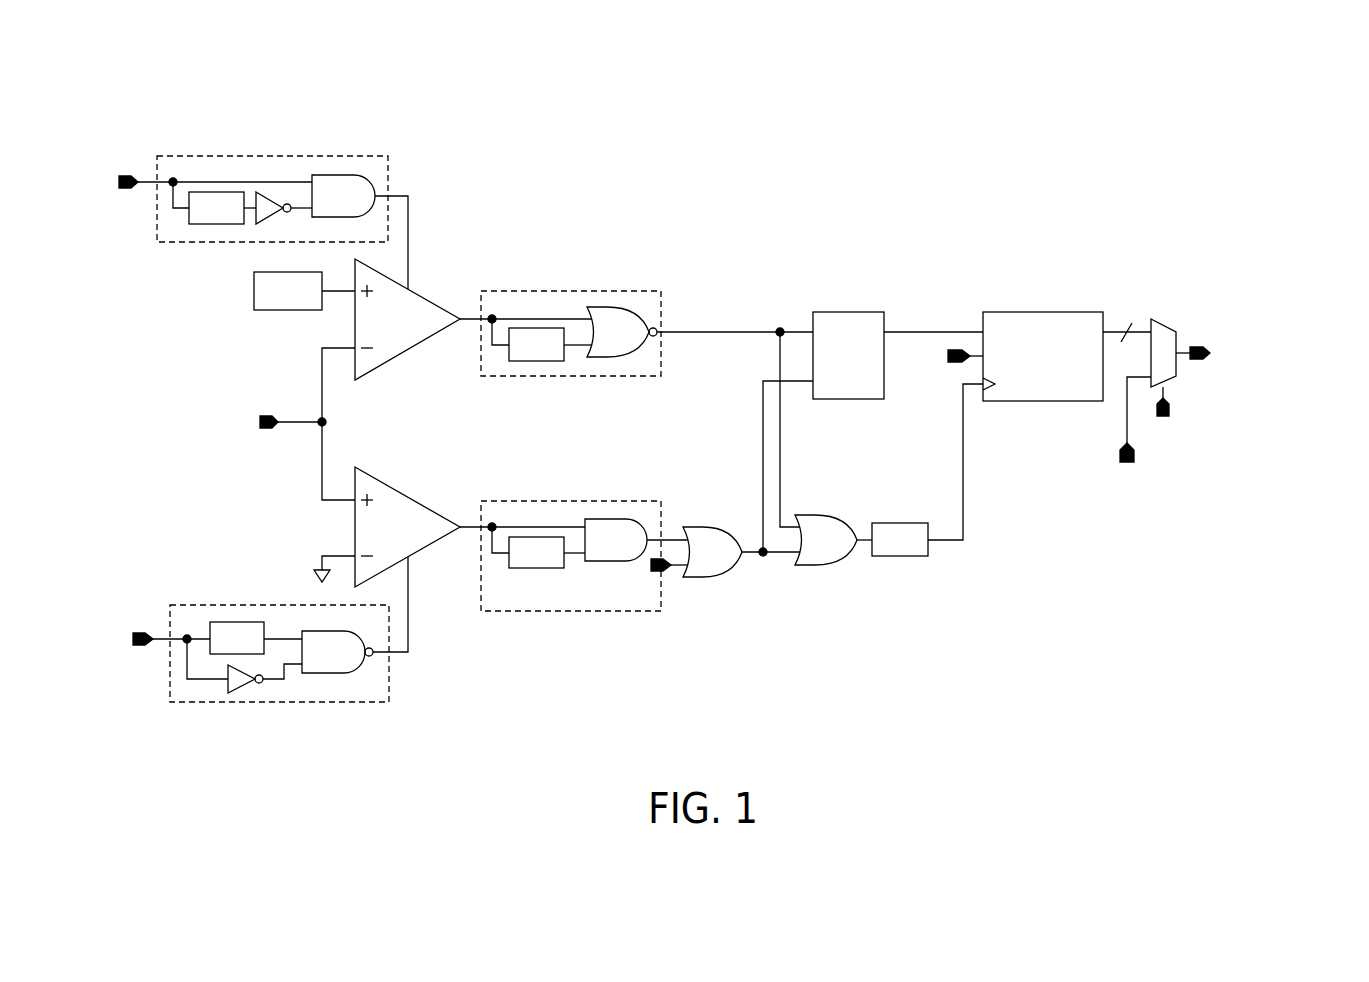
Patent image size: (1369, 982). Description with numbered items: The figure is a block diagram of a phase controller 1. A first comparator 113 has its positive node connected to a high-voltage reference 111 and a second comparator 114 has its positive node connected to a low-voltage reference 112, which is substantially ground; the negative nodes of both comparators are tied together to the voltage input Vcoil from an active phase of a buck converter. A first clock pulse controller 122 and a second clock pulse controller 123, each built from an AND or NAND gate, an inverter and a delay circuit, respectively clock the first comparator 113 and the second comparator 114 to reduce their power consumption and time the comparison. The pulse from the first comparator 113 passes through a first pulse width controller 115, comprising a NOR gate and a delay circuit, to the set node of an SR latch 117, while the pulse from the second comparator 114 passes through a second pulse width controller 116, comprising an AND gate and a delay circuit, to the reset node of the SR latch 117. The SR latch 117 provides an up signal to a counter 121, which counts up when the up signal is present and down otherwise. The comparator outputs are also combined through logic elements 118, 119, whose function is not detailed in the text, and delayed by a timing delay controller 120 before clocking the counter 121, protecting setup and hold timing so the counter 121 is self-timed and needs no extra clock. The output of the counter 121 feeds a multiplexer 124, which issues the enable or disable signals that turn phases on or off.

The phase controller 1 is at (1322, 74).
The reference voltage source 111 is at (254, 291).
The ground terminal 112 is at (318, 556).
The first comparator 113 is at (440, 300).
The second comparator 114 is at (440, 510).
The first pulse width controller 115 is at (571, 290).
The second pulse width controller 116 is at (571, 500).
The SR latch 117 is at (849, 311).
The first OR gate 118 is at (705, 578).
The second OR gate 119 is at (818, 566).
The timing delay controller 120 is at (900, 557).
The counter 121 is at (1043, 311).
The first clock pulse controller 122 is at (290, 155).
The second clock pulse controller 123 is at (278, 703).
The multiplexer 124 is at (1163, 318).